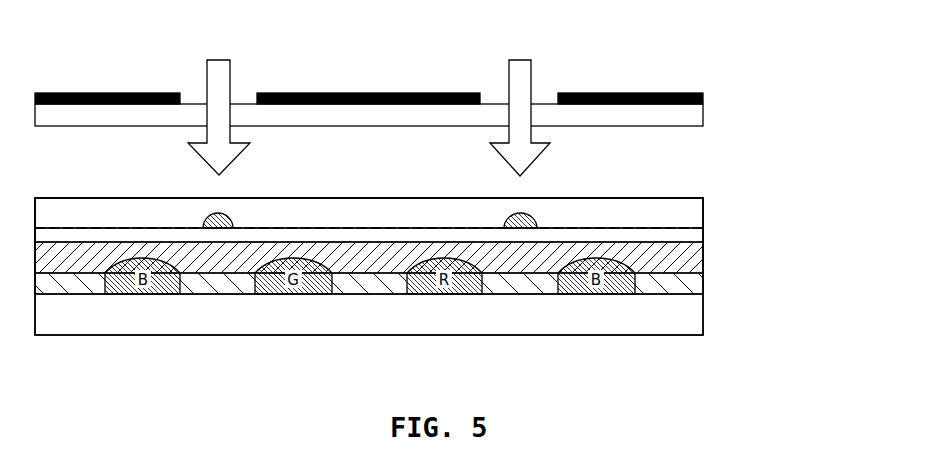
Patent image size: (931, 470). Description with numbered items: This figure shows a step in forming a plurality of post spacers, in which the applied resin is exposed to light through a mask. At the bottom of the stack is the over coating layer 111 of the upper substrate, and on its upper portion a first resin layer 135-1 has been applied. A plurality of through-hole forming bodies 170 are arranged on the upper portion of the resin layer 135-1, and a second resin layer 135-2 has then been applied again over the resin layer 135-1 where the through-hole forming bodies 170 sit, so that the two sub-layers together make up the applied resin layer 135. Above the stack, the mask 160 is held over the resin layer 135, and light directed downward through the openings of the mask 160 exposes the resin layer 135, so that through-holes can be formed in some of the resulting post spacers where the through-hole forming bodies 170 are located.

The mask 160 is at (703, 112).
The through-hole forming bodies 170 is at (527, 210).
The resin layer 135 is at (447, 221).
The resin layer 135-1 is at (703, 234).
The resin layer 135-2 is at (703, 206).
The over coating layer 111 is at (703, 253).